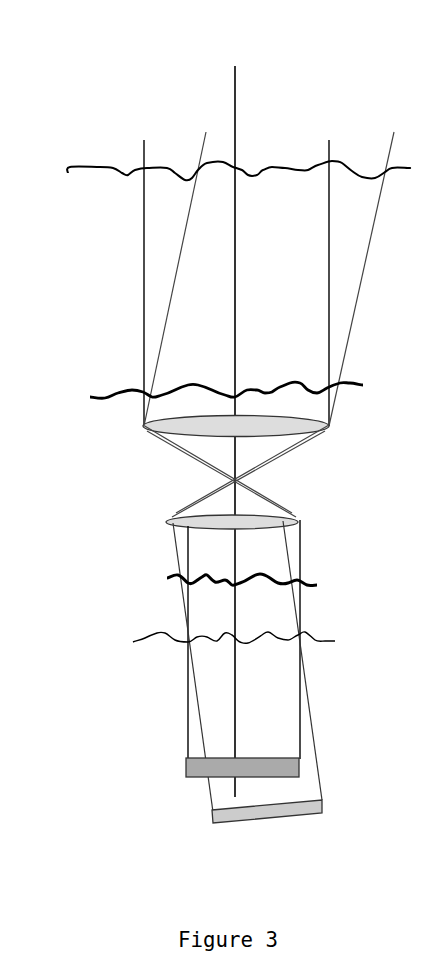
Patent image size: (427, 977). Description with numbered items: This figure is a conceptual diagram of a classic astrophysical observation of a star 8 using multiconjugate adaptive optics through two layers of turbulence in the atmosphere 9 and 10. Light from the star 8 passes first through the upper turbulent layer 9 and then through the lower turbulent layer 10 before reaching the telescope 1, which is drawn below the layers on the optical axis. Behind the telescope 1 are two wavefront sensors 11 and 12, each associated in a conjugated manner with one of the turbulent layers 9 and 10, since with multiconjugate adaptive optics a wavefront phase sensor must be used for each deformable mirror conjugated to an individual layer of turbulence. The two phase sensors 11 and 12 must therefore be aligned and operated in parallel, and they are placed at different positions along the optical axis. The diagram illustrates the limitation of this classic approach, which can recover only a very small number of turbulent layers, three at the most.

The telescope 1 is at (250, 435).
The star 8 is at (235, 413).
The layer of turbulence in the atmosphere 9 is at (224, 172).
The layer of turbulence in the atmosphere 10 is at (205, 394).
The wavefront sensor 11 is at (209, 783).
The wavefront sensor 12 is at (221, 826).